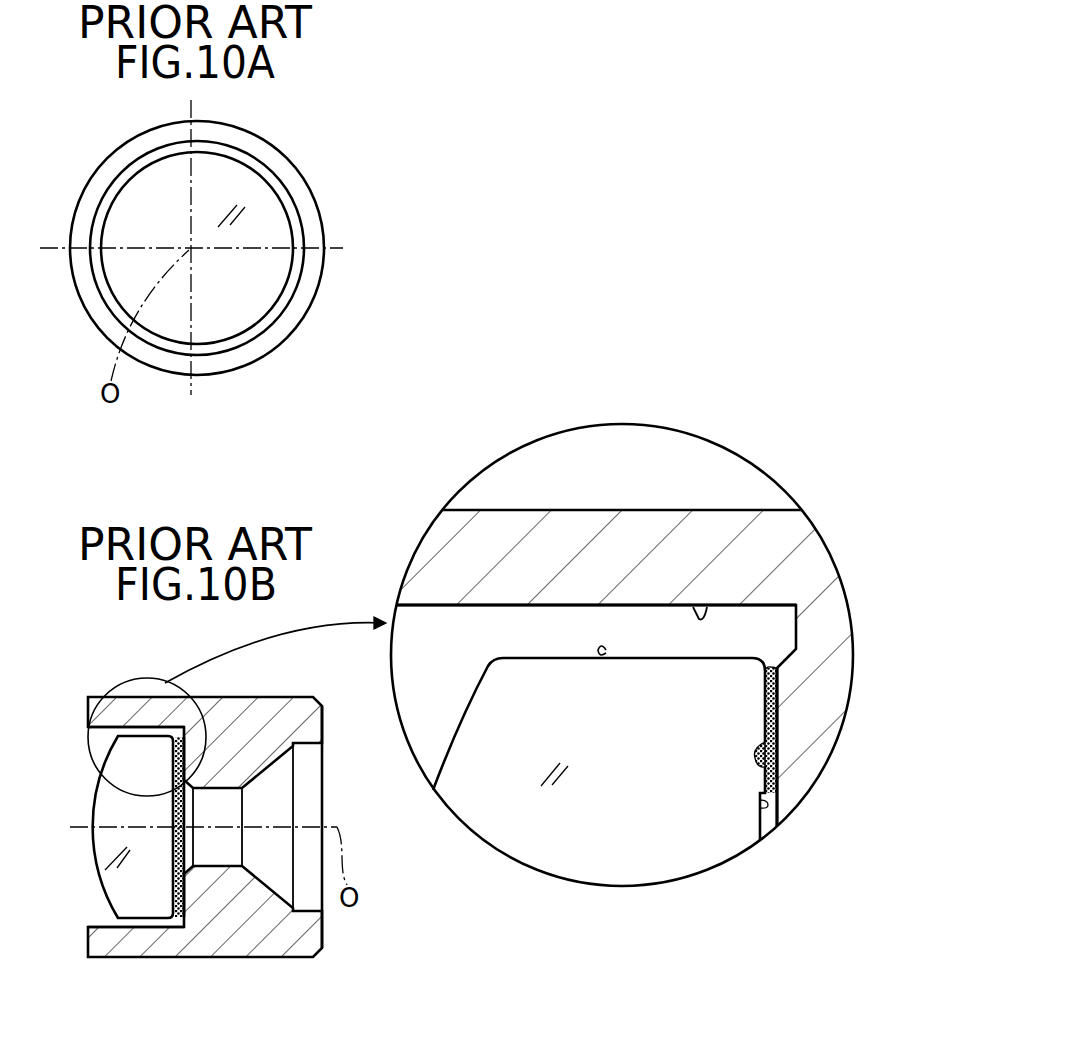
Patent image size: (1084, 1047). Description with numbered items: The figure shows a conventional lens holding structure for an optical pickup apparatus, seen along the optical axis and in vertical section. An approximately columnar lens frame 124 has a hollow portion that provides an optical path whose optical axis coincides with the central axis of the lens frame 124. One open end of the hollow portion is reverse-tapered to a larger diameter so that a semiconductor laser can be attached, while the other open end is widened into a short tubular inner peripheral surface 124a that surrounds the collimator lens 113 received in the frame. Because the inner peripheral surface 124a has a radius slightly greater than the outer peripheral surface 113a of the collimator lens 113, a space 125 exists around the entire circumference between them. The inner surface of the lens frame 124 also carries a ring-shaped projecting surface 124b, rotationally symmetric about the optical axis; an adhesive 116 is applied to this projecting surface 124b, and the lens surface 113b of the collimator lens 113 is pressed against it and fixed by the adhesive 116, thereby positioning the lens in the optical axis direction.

In FIG. 10A, the collimator lens 113 is at (268, 220).
In FIG. 10B, the collimator lens 113 is at (117, 893).
In FIG. 10B, the outer peripheral surface of the collimator lens 113a is at (606, 652).
In FIG. 10B, the lens surface 113b is at (196, 782).
In FIG. 10B, the adhesive 116 is at (171, 890).
In FIG. 10A, the lens frame 124 is at (283, 168).
In FIG. 10B, the lens frame 124 is at (303, 708).
In FIG. 10B, the inner peripheral surface 124a is at (707, 606).
In FIG. 10B, the projecting surface 124b is at (170, 912).
In FIG. 10A, the space 125 is at (285, 298).
In FIG. 10B, the space 125 is at (135, 922).